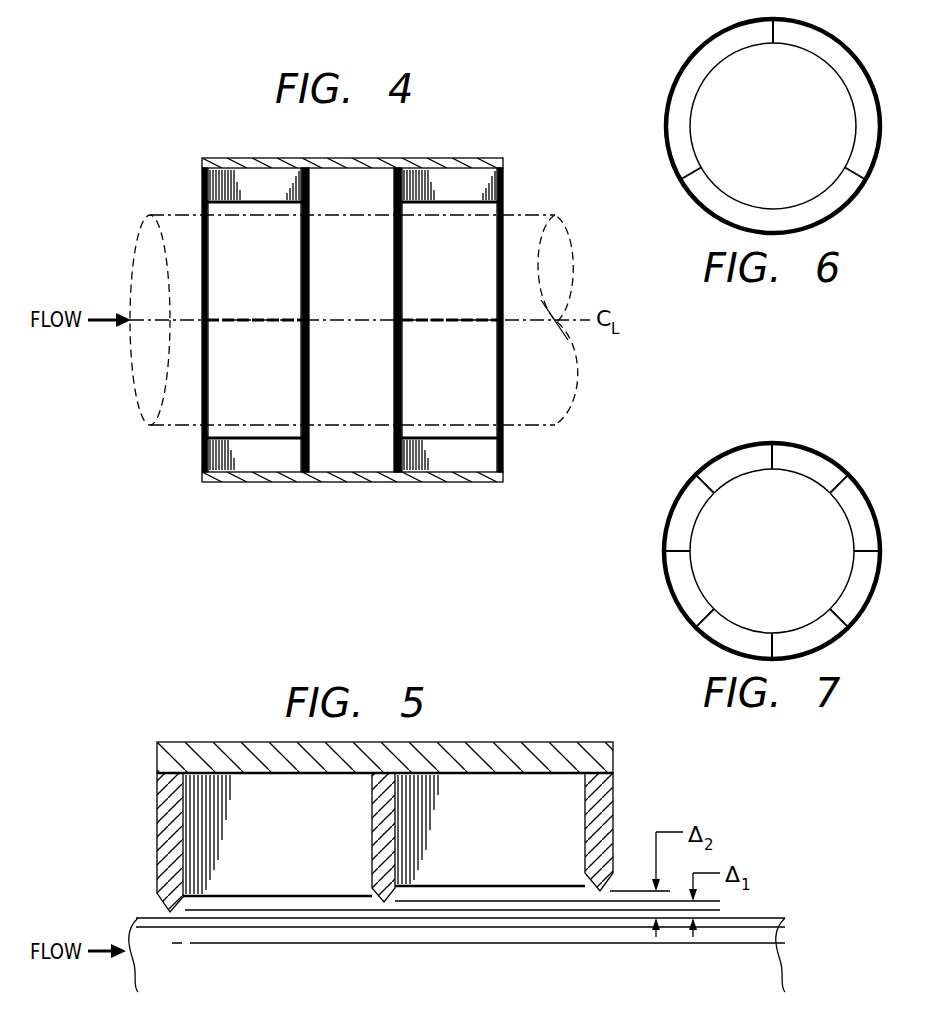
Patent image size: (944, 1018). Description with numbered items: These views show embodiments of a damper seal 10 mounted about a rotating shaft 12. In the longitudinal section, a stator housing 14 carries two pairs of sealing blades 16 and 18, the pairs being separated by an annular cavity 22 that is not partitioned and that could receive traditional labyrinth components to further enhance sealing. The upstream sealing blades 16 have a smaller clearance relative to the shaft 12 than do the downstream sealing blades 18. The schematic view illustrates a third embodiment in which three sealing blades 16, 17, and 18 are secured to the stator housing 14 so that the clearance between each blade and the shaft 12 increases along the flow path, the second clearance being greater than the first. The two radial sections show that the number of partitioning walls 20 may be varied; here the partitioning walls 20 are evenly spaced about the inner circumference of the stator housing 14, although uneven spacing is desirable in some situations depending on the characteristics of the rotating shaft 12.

In FIG. 4, the damper seal 10 is at (224, 148).
In FIG. 4, the shaft 12 is at (168, 212).
In FIG. 5, the shaft 12 is at (298, 967).
In FIG. 6, the shaft 12 is at (787, 138).
In FIG. 7, the shaft 12 is at (787, 564).
In FIG. 4, the stator housing 14 is at (460, 158).
In FIG. 5, the stator housing 14 is at (528, 742).
In FIG. 6, the stator housing 14 is at (700, 43).
In FIG. 7, the stator housing 14 is at (700, 471).
In FIG. 4, the upstream sealing blade 16 is at (204, 178).
In FIG. 5, the upstream sealing blade 16 is at (157, 805).
In FIG. 5, the sealing blade 17 is at (372, 850).
In FIG. 4, the downstream sealing blade 18 is at (504, 185).
In FIG. 5, the downstream sealing blade 18 is at (613, 800).
In FIG. 4, the partitioning wall 20 is at (262, 192).
In FIG. 5, the partitioning wall 20 is at (298, 832).
In FIG. 6, the partitioning wall 20 is at (780, 35).
In FIG. 7, the partitioning wall 20 is at (780, 462).
In FIG. 4, the annular cavity 22 is at (381, 177).